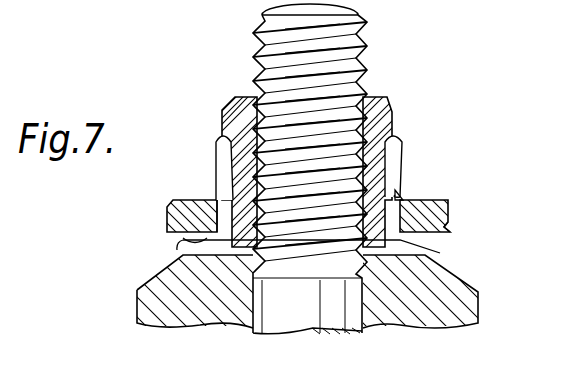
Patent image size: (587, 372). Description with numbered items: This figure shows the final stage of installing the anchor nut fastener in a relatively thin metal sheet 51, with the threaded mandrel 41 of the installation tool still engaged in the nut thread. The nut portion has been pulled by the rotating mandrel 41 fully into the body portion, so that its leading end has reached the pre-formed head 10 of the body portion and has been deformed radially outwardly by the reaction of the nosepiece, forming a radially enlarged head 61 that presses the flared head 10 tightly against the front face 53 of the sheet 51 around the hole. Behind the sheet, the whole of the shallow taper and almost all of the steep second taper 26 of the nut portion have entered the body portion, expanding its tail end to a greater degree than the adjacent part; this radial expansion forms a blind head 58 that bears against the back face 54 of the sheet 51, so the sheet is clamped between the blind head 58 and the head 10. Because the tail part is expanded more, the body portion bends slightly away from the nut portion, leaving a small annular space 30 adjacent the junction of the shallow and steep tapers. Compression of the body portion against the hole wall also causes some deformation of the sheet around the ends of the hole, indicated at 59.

The threaded mandrel 41 is at (262, 57).
The second taper 26 is at (390, 133).
The annular space 30 is at (222, 153).
The back face of the sheet 54 is at (202, 200).
The blind head 58 is at (397, 147).
The deformation of the sheet 59 is at (180, 248).
The metal sheet 51 is at (432, 207).
The front face of the sheet 53 is at (452, 231).
The head 10 is at (433, 247).
The radially enlarged head 61 is at (447, 262).